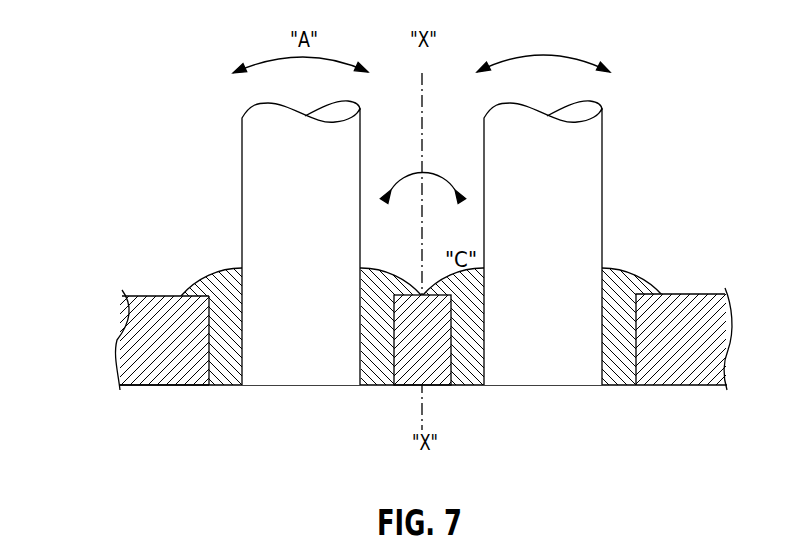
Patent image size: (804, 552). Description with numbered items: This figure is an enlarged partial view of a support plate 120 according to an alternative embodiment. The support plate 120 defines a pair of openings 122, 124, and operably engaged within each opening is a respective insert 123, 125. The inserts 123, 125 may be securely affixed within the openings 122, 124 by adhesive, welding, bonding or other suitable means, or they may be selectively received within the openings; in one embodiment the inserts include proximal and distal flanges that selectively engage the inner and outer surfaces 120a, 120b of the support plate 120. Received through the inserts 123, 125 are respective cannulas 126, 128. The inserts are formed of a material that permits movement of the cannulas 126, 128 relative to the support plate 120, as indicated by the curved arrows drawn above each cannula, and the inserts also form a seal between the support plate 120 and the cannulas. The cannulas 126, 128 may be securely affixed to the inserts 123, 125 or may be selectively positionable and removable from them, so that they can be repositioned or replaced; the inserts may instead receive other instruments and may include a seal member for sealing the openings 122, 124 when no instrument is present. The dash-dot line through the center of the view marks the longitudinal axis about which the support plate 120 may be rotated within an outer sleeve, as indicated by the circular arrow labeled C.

The support plate 120 is at (128, 343).
The inner surface of support plate 120a is at (142, 387).
The outer surface of support plate 120b is at (137, 295).
The opening 122 is at (393, 350).
The insert 123 is at (228, 387).
The opening 124 is at (487, 350).
The insert 125 is at (620, 386).
The cannula 126 is at (242, 212).
The cannula 128 is at (602, 197).